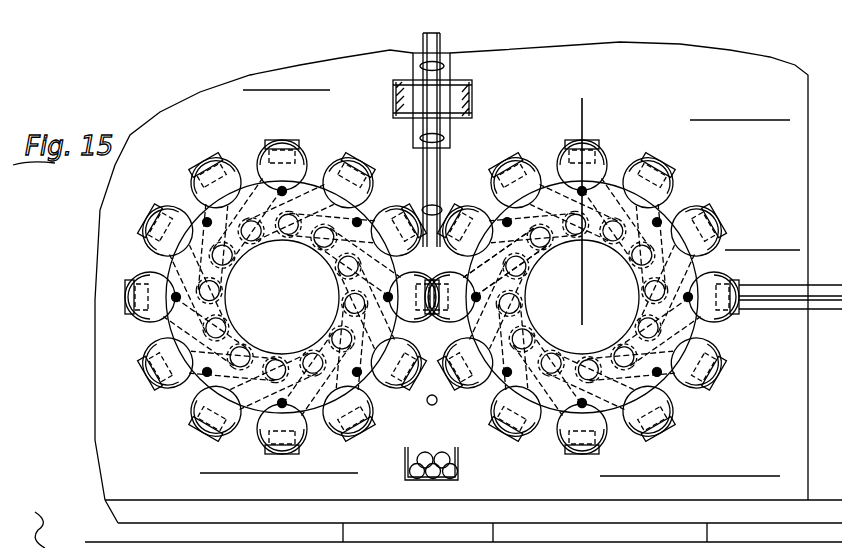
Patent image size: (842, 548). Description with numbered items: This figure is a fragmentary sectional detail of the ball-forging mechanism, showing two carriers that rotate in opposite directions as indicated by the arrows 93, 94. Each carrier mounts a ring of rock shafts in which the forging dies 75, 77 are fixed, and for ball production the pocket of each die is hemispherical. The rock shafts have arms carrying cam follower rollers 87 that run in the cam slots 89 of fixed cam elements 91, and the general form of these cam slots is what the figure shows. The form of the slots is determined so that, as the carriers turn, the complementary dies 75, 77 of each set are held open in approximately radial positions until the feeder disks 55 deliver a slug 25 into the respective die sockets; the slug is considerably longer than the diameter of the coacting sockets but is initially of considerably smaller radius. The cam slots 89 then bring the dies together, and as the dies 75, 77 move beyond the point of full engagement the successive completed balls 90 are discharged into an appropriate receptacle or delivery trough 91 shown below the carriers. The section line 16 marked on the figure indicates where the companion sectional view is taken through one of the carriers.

The section line 16- 16 is at (582, 318).
The slug 25 is at (441, 208).
The feeder disks 55 is at (426, 171).
The forging die 75 is at (411, 383).
The forging die 77 is at (460, 383).
The cam follower rollers 87 is at (538, 315).
The cam slots 89 is at (513, 261).
The completed balls 90 is at (434, 405).
The fixed cam elements / delivery trough 91 is at (460, 465).
The arrow 93 is at (282, 285).
The arrow 94 is at (633, 277).